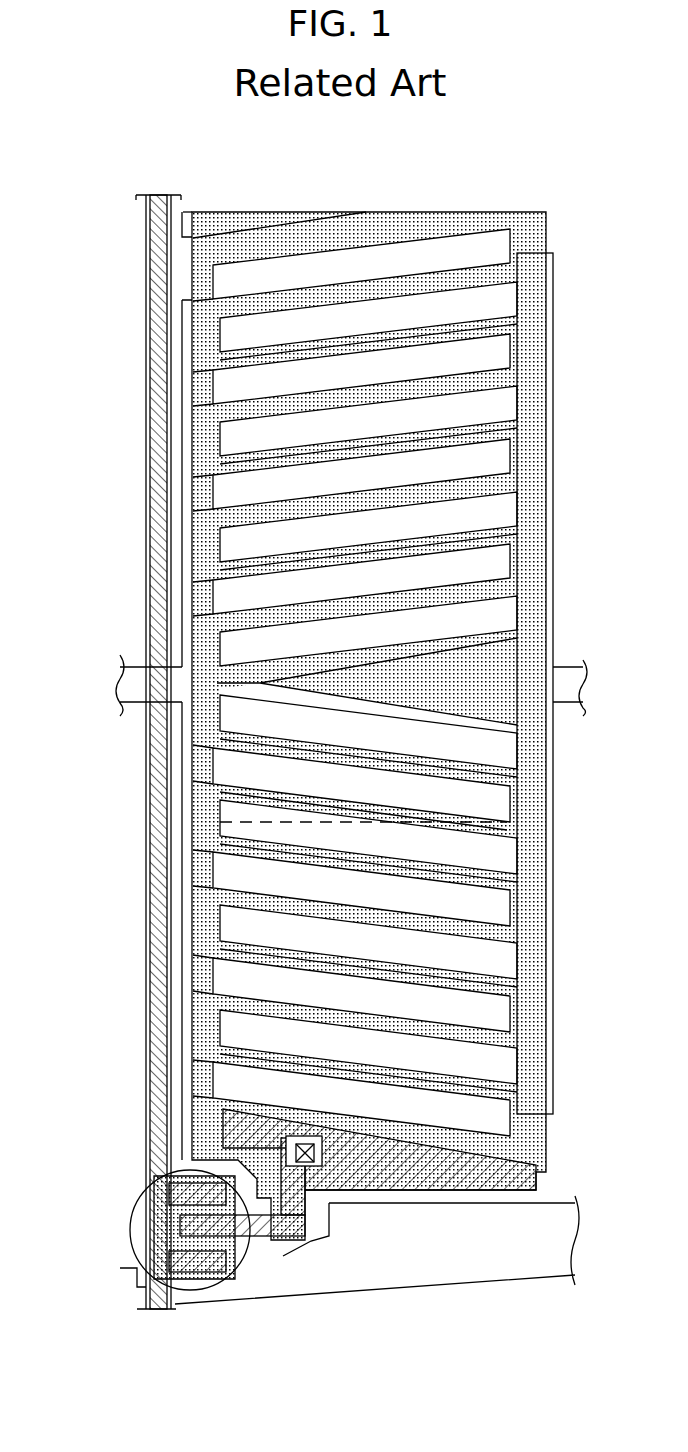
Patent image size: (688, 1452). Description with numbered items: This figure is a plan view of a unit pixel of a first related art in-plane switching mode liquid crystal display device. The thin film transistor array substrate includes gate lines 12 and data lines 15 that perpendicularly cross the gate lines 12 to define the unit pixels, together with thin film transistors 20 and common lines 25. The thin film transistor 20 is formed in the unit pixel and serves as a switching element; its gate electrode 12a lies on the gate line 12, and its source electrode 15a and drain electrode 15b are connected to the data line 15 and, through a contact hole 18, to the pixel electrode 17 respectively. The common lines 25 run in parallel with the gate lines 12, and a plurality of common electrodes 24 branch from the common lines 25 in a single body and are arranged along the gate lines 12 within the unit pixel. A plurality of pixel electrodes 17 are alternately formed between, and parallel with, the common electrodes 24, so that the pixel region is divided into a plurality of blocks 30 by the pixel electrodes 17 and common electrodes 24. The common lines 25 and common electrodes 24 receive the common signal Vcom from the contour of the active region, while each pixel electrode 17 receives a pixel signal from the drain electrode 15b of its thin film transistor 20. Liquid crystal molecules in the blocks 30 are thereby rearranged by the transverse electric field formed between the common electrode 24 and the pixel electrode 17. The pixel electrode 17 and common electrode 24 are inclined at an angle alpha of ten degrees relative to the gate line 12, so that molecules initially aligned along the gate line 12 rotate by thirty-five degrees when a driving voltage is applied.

The gate line 12 is at (435, 1272).
The gate electrode 12a is at (180, 1172).
The data line 15 is at (146, 860).
The source electrode 15a is at (204, 1279).
The drain electrode 15b is at (373, 1195).
The pixel electrode 17 is at (257, 505).
The drain contact hole 18 is at (302, 1170).
The thin film transistor 20 is at (232, 1276).
The common electrode 24 is at (257, 563).
The common line 25 is at (140, 690).
The block 30 is at (245, 928).